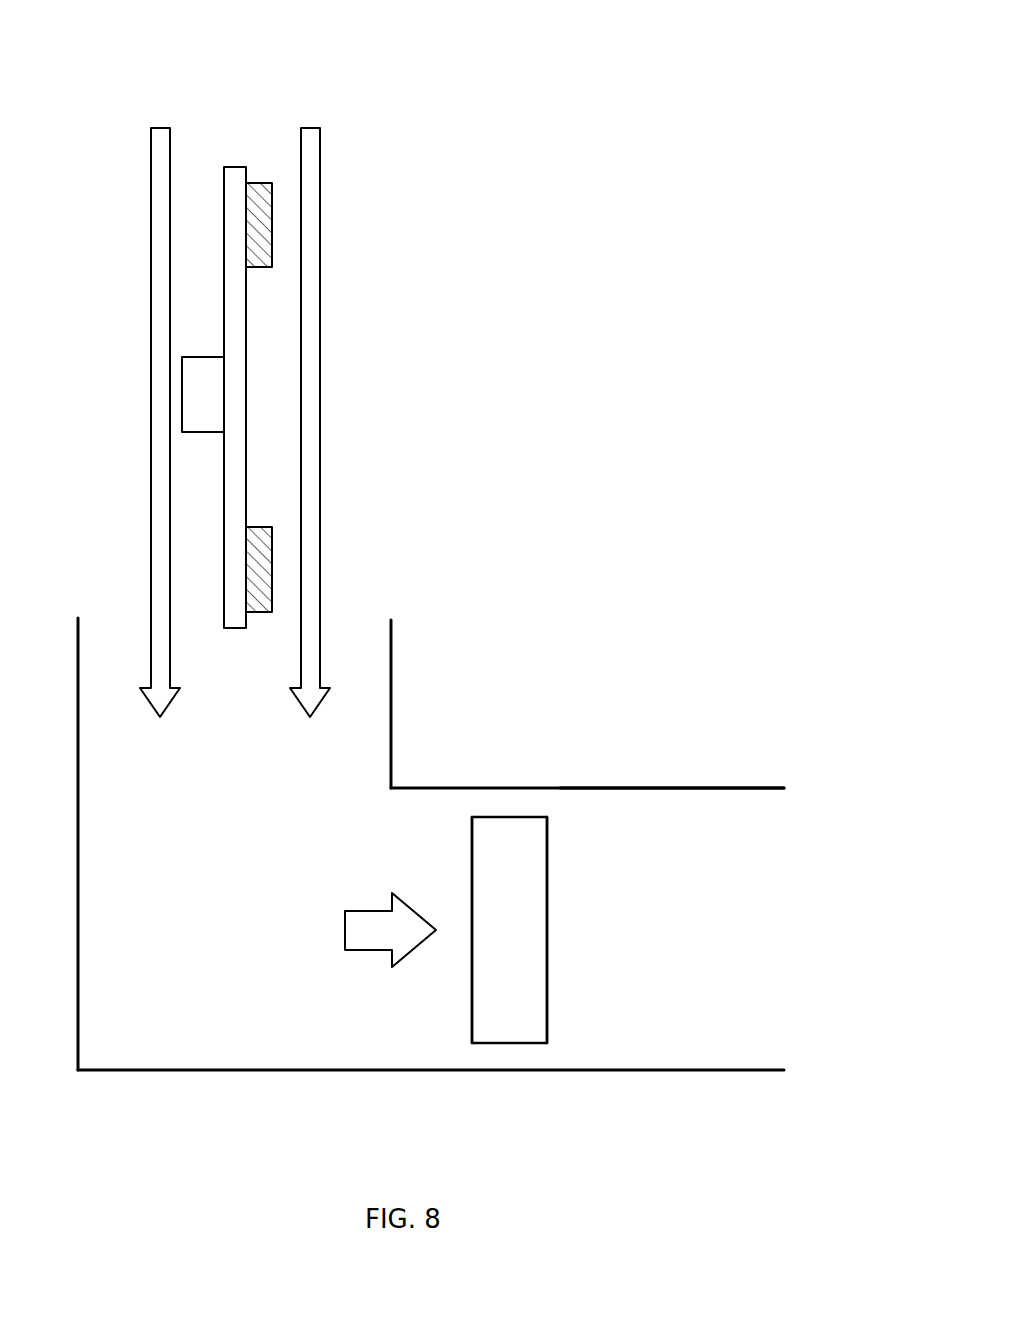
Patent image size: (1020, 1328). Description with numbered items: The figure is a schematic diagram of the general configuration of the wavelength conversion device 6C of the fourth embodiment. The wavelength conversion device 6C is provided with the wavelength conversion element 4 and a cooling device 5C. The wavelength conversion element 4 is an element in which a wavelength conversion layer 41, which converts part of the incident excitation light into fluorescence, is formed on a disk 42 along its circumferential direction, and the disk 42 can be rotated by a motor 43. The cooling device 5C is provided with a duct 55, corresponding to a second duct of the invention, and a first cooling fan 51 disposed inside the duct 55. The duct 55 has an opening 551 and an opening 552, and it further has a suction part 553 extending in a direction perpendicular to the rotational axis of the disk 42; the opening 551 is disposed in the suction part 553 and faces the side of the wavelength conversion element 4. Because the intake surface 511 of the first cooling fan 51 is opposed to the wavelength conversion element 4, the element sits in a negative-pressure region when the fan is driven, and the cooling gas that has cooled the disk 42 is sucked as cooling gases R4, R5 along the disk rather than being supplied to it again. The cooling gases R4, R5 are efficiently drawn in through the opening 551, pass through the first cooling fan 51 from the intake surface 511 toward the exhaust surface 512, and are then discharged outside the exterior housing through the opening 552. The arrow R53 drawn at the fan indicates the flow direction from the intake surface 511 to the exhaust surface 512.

The wavelength conversion element 4 is at (236, 318).
The wavelength conversion layer 41 is at (257, 191).
The disk 42 is at (231, 213).
The motor 43 is at (205, 421).
The cooling gas R5 is at (160, 366).
The cooling gas R4 is at (313, 366).
The wavelength conversion device 6C is at (631, 112).
The cooling device 5C is at (573, 613).
The duct 55 is at (595, 779).
The opening 551 is at (253, 683).
The opening 552 is at (686, 823).
The suction part 553 is at (400, 683).
The first cooling fan 51 is at (516, 889).
The intake surface 511 is at (471, 850).
The exhaust surface 512 is at (548, 934).
The insertion direction R53 is at (366, 941).